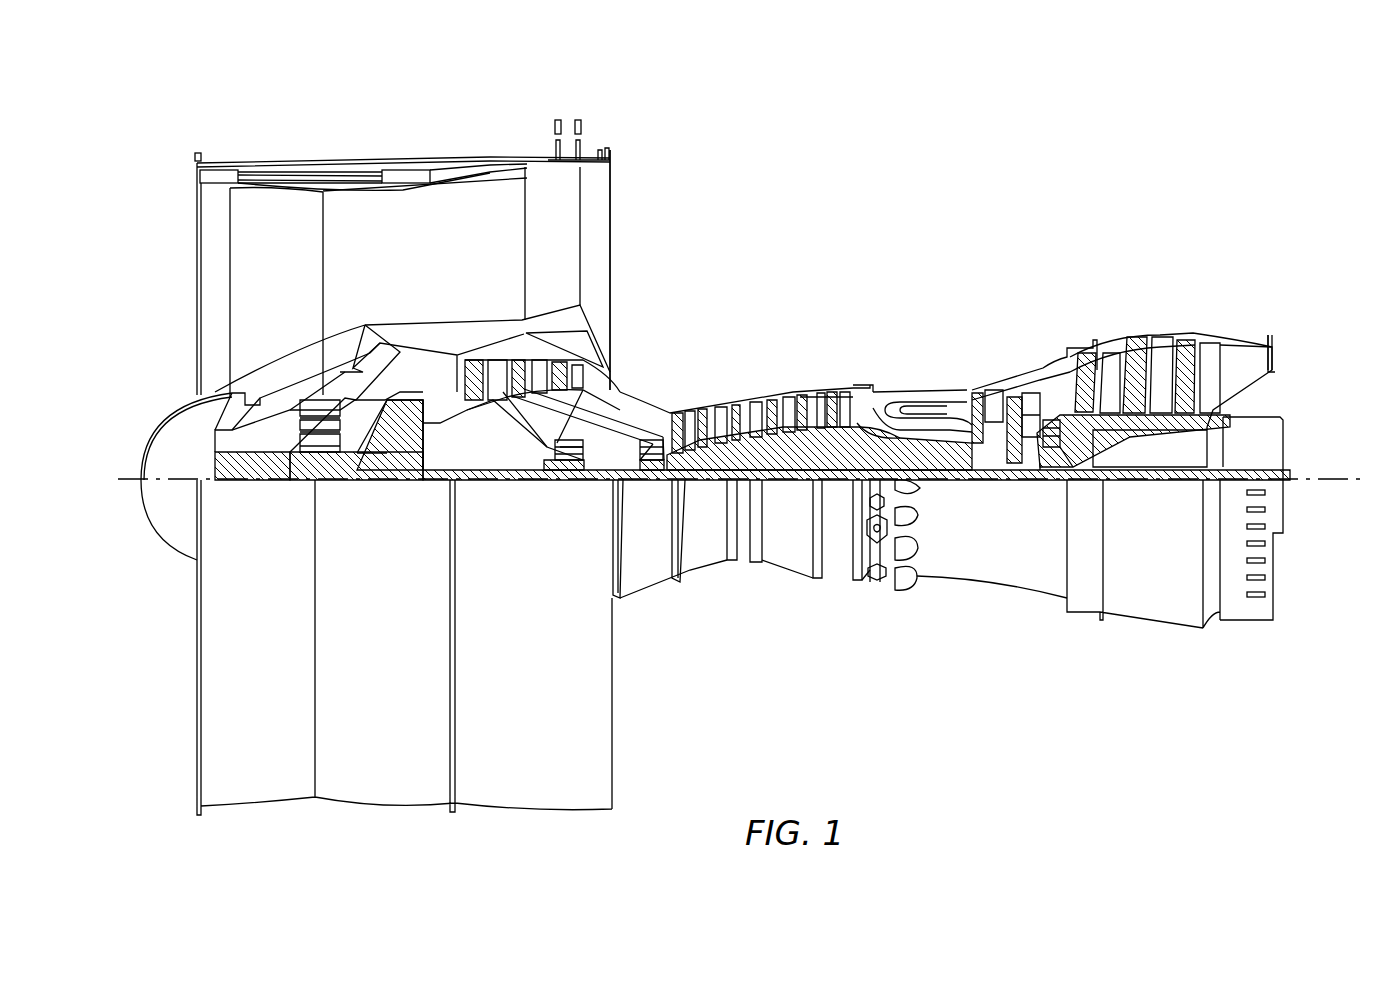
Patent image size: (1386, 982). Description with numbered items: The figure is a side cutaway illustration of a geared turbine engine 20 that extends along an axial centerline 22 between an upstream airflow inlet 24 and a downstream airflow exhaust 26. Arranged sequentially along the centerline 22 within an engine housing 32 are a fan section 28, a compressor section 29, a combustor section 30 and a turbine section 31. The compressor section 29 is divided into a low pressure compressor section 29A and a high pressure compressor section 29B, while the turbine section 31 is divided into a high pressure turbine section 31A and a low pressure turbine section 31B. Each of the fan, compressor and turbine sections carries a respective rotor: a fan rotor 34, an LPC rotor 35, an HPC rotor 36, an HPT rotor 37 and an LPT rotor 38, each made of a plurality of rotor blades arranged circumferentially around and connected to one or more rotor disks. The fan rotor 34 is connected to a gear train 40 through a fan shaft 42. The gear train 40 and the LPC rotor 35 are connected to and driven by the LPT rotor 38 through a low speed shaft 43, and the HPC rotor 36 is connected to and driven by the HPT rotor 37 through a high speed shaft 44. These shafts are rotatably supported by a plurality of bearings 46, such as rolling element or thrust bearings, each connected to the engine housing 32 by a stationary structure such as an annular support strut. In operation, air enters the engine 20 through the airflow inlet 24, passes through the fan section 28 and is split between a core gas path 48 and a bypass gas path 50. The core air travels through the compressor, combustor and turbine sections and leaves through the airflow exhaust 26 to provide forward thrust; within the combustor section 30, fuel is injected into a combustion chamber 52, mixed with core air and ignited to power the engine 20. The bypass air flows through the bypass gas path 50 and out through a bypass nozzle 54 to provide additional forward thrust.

The geared turbine engine 20 is at (160, 142).
The axial centerline 22 is at (1345, 478).
The upstream airflow inlet 24 is at (197, 236).
The downstream airflow exhaust 26 is at (1275, 372).
The fan section 28 is at (370, 135).
The compressor section 29 is at (835, 78).
The low pressure compressor section 29A is at (612, 122).
The high pressure compressor section 29B is at (838, 314).
The combustor section 30 is at (960, 314).
The turbine section 31 is at (1230, 246).
The high pressure turbine section 31A is at (1045, 314).
The low pressure turbine section 31B is at (1230, 314).
The engine housing 32 is at (626, 608).
The fan rotor 34 is at (222, 393).
The LPC rotor 35 is at (520, 440).
The HPC rotor 36 is at (795, 480).
The HPT rotor 37 is at (998, 480).
The LPT rotor 38 is at (1145, 422).
The gear train 40 is at (408, 482).
The fan shaft 42 is at (236, 482).
The low speed shaft 43 is at (1155, 482).
The high speed shaft 44 is at (928, 482).
The bearings 46 is at (300, 480).
The core gas path 48 is at (636, 406).
The bypass gas path 50 is at (458, 251).
The combustion chamber 52 is at (922, 412).
The bypass nozzle 54 is at (612, 222).